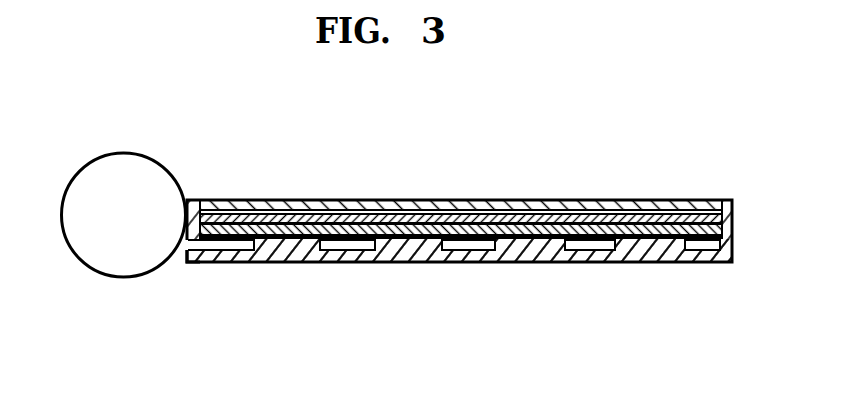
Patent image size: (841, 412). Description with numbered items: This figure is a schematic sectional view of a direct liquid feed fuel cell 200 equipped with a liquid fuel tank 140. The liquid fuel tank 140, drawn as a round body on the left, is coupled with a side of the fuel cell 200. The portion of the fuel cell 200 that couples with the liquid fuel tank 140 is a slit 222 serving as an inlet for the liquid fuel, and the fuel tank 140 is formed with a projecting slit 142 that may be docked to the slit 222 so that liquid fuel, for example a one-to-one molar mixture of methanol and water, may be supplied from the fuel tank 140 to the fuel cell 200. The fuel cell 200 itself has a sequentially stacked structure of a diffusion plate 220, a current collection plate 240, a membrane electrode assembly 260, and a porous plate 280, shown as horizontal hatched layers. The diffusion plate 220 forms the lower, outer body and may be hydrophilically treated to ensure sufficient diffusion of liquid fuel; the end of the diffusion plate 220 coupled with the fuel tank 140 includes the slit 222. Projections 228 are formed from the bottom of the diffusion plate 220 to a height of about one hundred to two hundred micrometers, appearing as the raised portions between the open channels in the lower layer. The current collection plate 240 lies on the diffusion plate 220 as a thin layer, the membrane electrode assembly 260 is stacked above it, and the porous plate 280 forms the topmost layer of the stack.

The liquid fuel tank 140 is at (123, 270).
The projecting slit 142 is at (184, 257).
The direct liquid feed fuel cell 200 is at (449, 210).
The diffusion plate 220 is at (660, 263).
The slit 222 is at (201, 244).
The projections 228 is at (526, 242).
The current collection plate 240 is at (700, 200).
The membrane electrode assembly 260 is at (625, 200).
The porous plate 280 is at (545, 200).